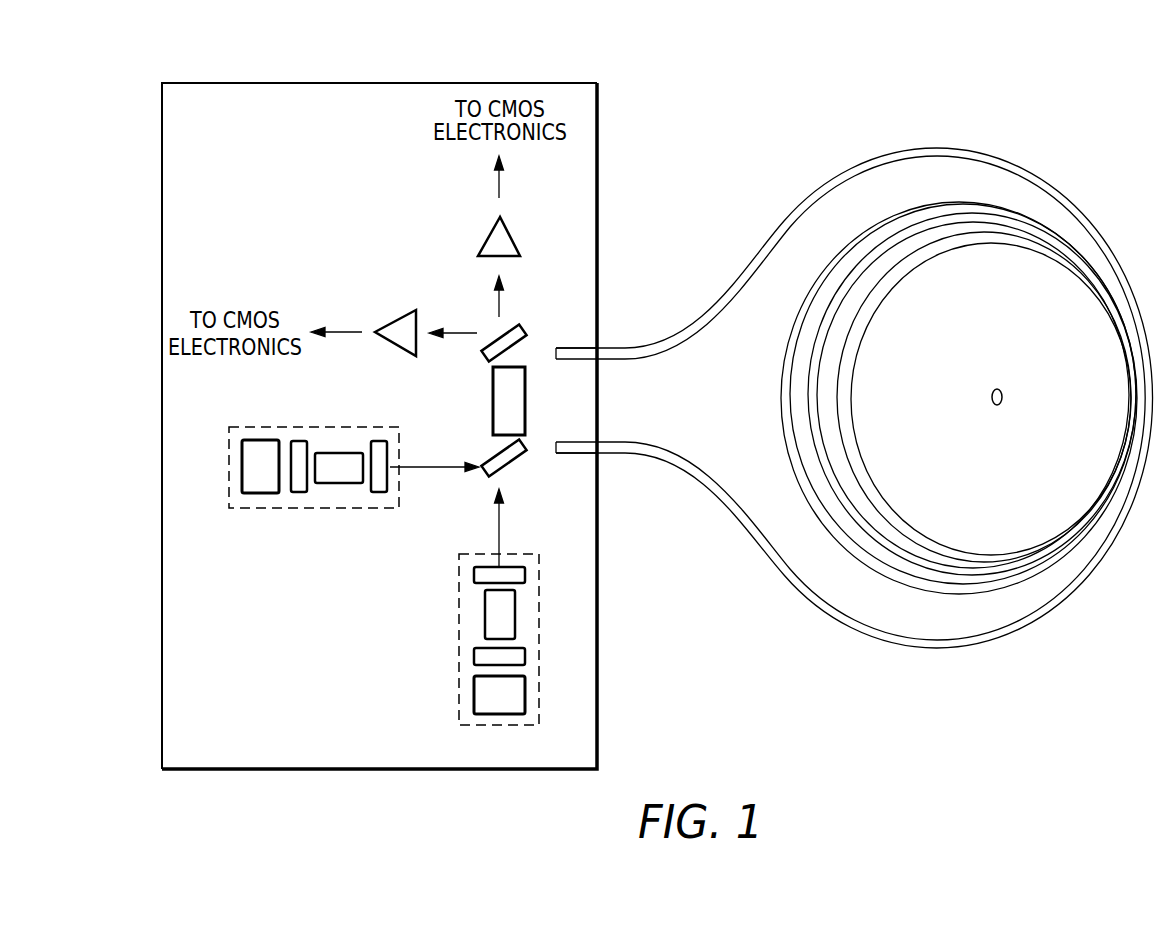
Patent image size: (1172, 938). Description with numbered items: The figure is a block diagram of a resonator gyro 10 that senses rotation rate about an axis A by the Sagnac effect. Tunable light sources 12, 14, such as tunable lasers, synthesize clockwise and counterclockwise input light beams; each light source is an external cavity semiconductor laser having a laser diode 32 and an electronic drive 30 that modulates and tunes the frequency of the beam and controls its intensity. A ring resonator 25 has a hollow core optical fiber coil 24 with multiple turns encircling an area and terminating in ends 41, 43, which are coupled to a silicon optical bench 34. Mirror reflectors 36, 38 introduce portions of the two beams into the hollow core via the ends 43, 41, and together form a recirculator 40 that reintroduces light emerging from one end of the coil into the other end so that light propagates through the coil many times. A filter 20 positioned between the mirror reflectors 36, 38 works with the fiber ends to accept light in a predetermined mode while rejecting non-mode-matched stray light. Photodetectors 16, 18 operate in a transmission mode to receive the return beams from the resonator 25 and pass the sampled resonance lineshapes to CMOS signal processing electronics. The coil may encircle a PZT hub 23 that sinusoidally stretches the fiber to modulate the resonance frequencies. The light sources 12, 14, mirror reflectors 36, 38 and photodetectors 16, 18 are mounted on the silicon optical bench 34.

The resonator gyro 10 is at (257, 50).
The tunable light source 12 is at (492, 624).
The tunable light source 14 is at (377, 555).
The photodetector 16 is at (394, 317).
The photodetector 18 is at (489, 237).
The filter 20 is at (492, 397).
The PZT hub 23 is at (988, 244).
The hollow core optical fiber coil 24 is at (854, 371).
The ring resonator 25 is at (632, 262).
The electronic drive 30 is at (261, 494).
The laser diode 32 is at (484, 609).
The silicon optical bench 34 is at (218, 126).
The mirror reflector 36 is at (528, 463).
The mirror reflector 38 is at (528, 338).
The recirculator 40 is at (430, 384).
The end of optical fiber coil 41 is at (590, 422).
The end of optical fiber coil 43 is at (590, 328).
The axis A is at (1028, 392).